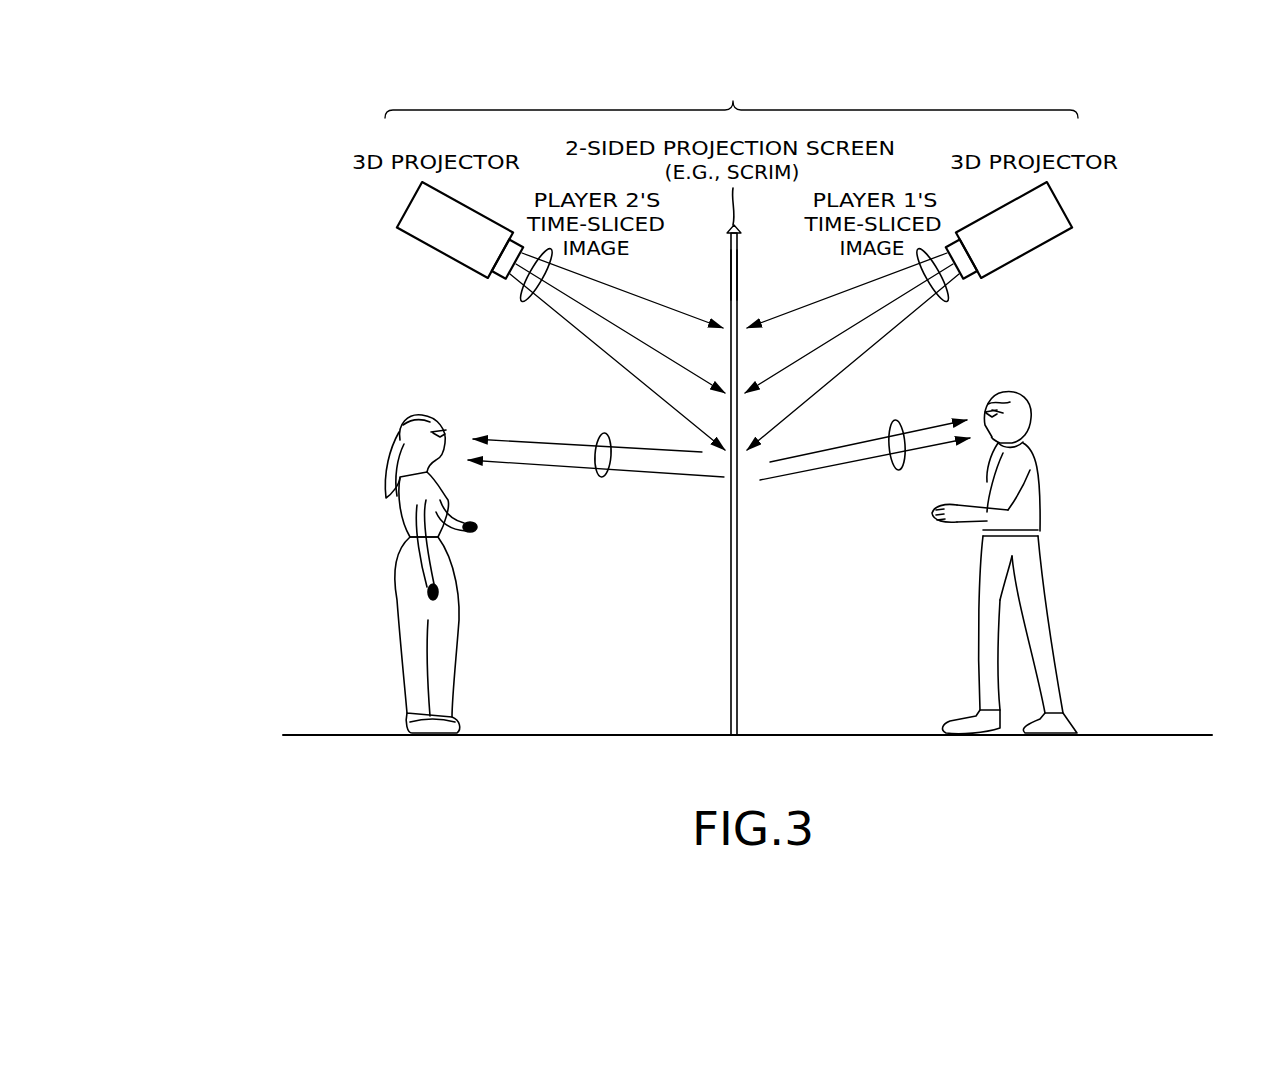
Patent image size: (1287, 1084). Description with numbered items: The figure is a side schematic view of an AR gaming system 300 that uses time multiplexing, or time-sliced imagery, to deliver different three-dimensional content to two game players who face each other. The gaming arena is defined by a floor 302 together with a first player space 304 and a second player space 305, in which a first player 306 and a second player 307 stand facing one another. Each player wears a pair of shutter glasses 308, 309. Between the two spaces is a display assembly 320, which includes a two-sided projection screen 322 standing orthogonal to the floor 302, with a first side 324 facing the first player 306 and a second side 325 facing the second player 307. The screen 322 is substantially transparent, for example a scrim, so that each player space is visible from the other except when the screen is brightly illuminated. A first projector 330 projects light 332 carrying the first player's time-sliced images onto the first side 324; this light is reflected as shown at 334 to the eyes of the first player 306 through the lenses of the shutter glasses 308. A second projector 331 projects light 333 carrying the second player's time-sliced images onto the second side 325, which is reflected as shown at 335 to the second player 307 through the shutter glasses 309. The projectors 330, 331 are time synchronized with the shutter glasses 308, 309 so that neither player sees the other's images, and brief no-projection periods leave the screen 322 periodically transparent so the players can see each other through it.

The AR gaming system 300 is at (258, 194).
The 3D display assembly 320 is at (731, 94).
The 2-sided projection screen 322 is at (740, 229).
The first side 324 is at (738, 275).
The second side 325 is at (731, 275).
The first 3D projector 330 is at (1067, 205).
The second 3D projector 331 is at (402, 205).
The light 332 is at (947, 298).
The light 333 is at (525, 303).
The reflected light 334 is at (897, 470).
The reflected light 335 is at (601, 477).
The first player space 304 is at (1160, 327).
The second player space 305 is at (292, 336).
The first player 306 is at (1042, 477).
The second player 307 is at (400, 517).
The 3D shutter glasses 308 is at (988, 405).
The 3D shutter glasses 309 is at (440, 432).
The floor 302 is at (1113, 736).